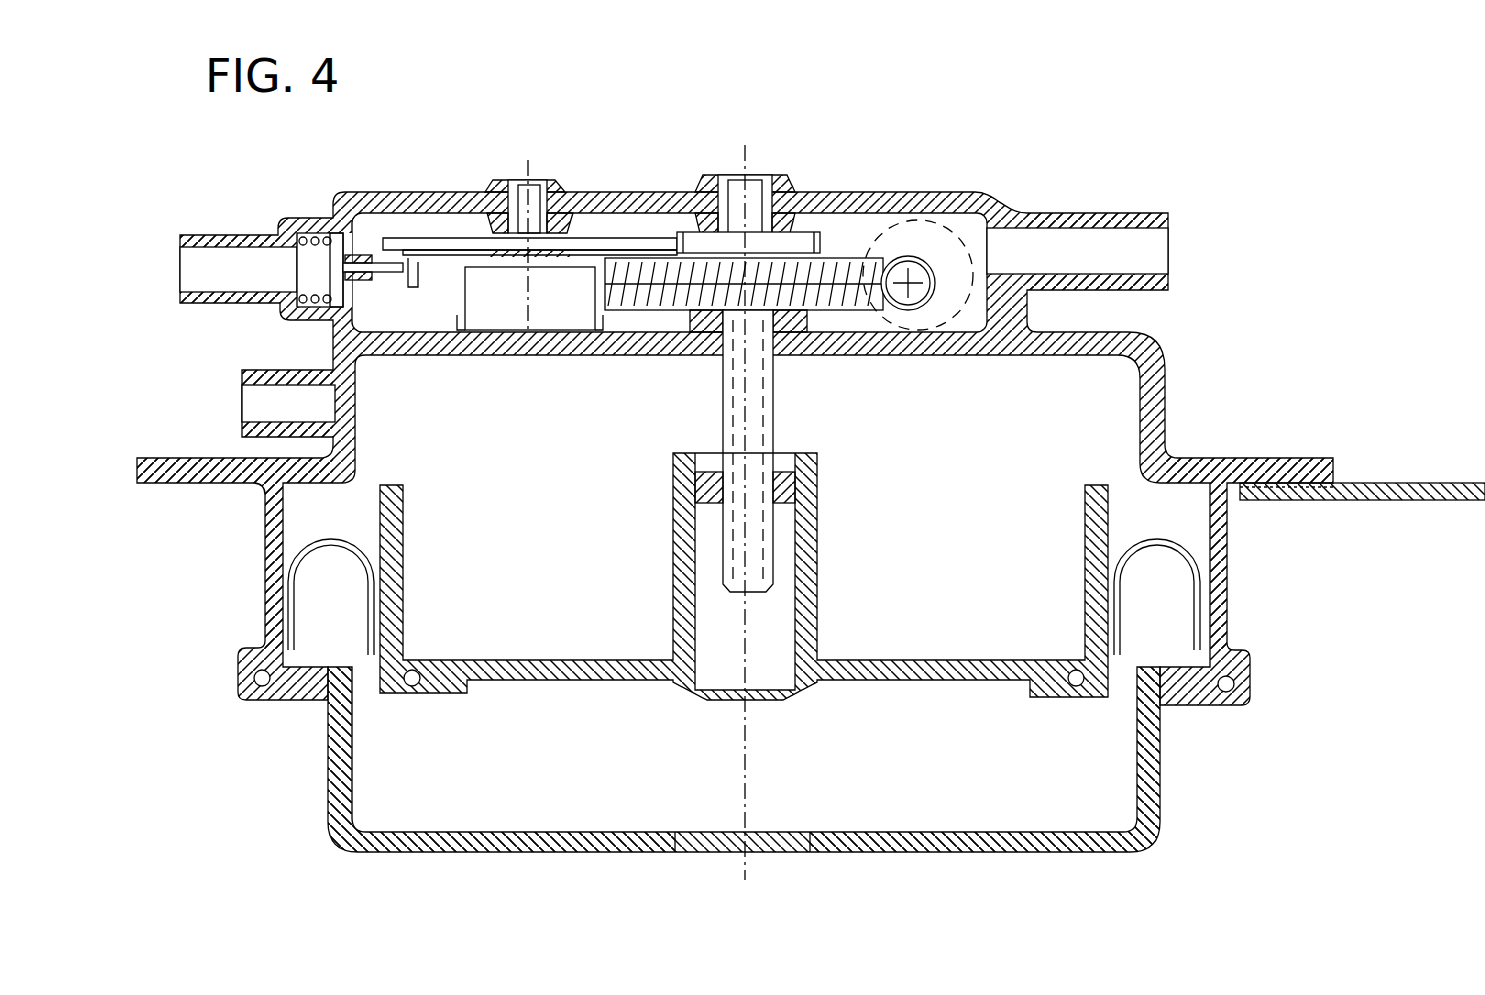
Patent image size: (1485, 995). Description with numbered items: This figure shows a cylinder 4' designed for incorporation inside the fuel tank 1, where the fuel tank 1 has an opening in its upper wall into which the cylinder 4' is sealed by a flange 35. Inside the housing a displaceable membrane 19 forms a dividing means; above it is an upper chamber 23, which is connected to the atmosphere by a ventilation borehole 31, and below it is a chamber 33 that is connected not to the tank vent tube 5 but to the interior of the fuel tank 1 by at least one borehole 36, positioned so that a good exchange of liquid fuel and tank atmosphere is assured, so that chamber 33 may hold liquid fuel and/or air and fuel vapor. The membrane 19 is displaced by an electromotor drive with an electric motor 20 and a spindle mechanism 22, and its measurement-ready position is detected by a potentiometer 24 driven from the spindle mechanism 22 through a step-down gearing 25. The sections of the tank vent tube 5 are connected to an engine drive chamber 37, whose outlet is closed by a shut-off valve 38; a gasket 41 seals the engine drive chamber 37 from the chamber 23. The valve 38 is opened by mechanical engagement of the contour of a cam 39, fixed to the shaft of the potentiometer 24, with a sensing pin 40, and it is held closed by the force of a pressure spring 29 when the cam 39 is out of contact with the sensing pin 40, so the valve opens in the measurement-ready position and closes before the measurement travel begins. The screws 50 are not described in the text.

The fuel tank 1 is at (1297, 494).
The cylinder 4' is at (790, 777).
The tank vent tube 5 is at (220, 270).
The membrane 19 is at (573, 672).
The electric motor 20 is at (957, 240).
The spindle mechanism 22 is at (817, 487).
The upper chamber 23 is at (390, 453).
The potentiometer 24 is at (513, 305).
The step-down gearing 25 is at (917, 240).
The pressure spring 29 is at (318, 238).
The ventilation borehole 31 is at (262, 398).
The chamber 33 is at (390, 797).
The flange 35 is at (213, 482).
The borehole 36 is at (713, 842).
The engine drive chamber 37 is at (735, 426).
The shut-off valve 38 is at (324, 270).
The cam 39 is at (417, 273).
The sensing pin 40 is at (387, 268).
The gasket 41 is at (772, 346).
The screw 50 is at (648, 240).